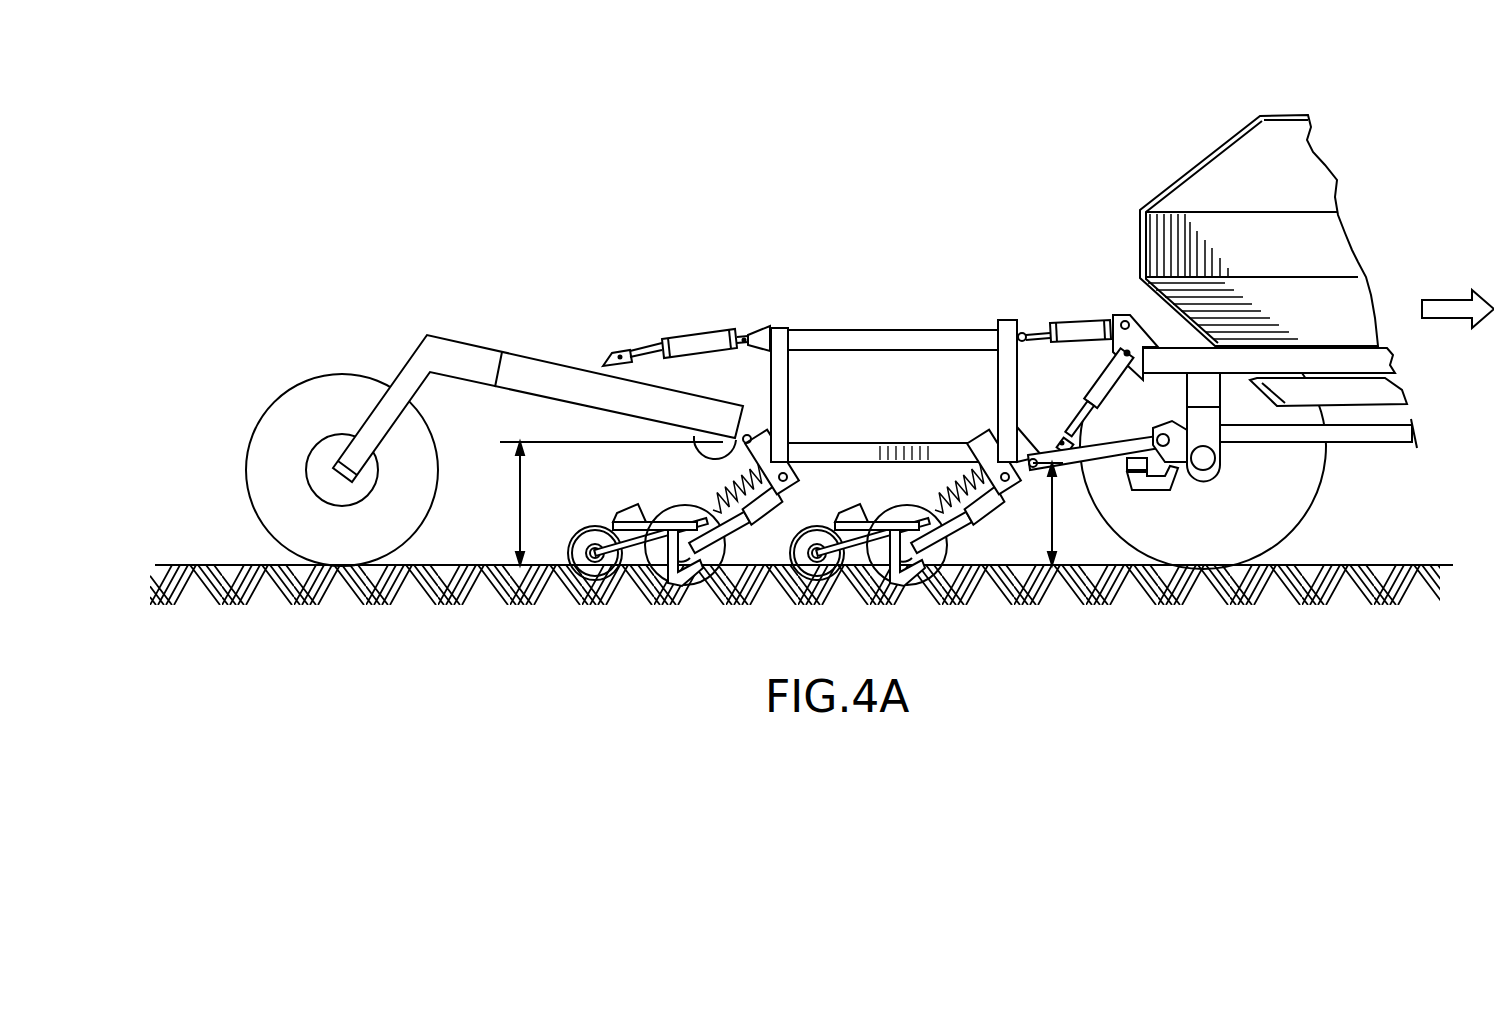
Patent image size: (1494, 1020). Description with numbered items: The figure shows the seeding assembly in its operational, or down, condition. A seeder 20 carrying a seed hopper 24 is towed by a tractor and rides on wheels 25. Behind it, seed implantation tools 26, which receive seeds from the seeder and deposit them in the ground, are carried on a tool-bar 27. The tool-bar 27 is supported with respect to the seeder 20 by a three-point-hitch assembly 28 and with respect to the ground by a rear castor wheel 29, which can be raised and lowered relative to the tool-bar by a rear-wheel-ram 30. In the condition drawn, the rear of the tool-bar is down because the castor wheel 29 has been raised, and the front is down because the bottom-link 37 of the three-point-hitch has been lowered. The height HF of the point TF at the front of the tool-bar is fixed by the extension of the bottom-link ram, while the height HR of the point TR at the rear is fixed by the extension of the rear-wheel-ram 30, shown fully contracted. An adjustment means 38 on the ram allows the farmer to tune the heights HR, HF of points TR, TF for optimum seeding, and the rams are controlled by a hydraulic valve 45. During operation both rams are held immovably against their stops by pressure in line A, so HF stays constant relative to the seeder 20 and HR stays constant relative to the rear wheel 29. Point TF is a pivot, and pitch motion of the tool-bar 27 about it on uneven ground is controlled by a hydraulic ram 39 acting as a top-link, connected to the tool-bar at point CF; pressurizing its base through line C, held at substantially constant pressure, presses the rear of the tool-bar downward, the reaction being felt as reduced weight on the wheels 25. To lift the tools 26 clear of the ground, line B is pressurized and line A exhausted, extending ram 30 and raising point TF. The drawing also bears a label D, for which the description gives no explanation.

The seeder 20 is at (1200, 138).
The seed hopper 24 is at (1205, 212).
The wheels 25 is at (1286, 500).
The seed implantation tools 26 is at (928, 565).
The tool-bar 27 is at (890, 337).
The three-point-hitch assembly 28 is at (1062, 248).
The rear castor wheel 29 is at (332, 390).
The rear-wheel-ram 30 is at (697, 340).
The bottom-link 37 is at (1102, 462).
The adjustment means 38 is at (662, 338).
The top-link-ram 39 is at (1082, 328).
The hydraulic valve 45 is at (1120, 473).
The line A is at (677, 350).
The line B is at (723, 342).
The line C is at (1108, 328).
The front cylinder pivot point D is at (1058, 328).
The point CF is at (1022, 330).
The point TR is at (743, 437).
The point TF is at (1038, 467).
The height HR is at (523, 520).
The height HF is at (1048, 555).